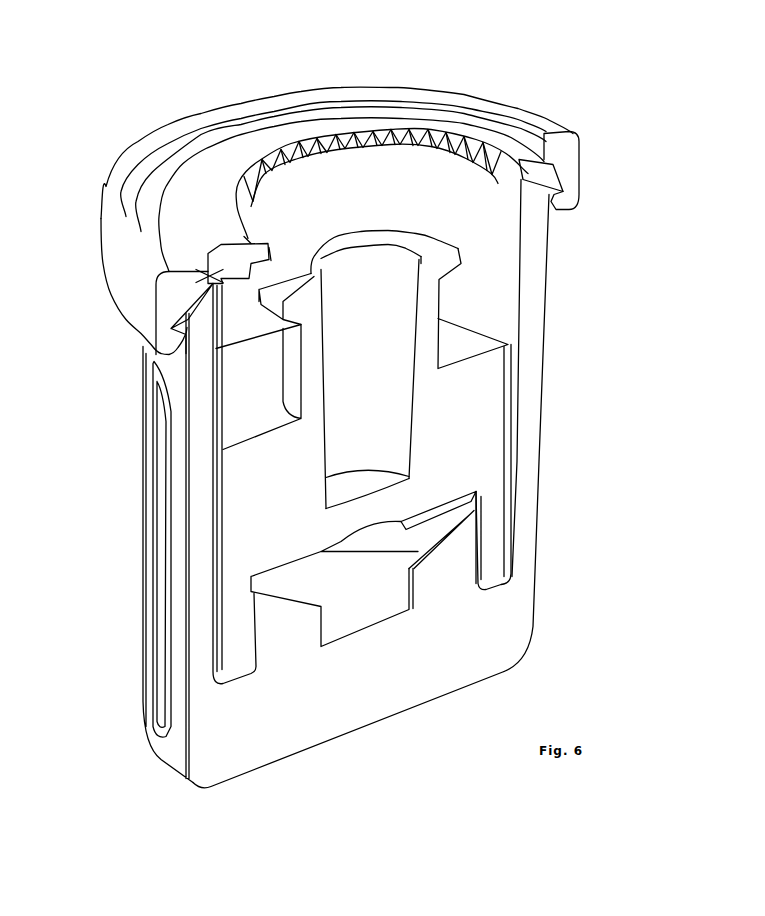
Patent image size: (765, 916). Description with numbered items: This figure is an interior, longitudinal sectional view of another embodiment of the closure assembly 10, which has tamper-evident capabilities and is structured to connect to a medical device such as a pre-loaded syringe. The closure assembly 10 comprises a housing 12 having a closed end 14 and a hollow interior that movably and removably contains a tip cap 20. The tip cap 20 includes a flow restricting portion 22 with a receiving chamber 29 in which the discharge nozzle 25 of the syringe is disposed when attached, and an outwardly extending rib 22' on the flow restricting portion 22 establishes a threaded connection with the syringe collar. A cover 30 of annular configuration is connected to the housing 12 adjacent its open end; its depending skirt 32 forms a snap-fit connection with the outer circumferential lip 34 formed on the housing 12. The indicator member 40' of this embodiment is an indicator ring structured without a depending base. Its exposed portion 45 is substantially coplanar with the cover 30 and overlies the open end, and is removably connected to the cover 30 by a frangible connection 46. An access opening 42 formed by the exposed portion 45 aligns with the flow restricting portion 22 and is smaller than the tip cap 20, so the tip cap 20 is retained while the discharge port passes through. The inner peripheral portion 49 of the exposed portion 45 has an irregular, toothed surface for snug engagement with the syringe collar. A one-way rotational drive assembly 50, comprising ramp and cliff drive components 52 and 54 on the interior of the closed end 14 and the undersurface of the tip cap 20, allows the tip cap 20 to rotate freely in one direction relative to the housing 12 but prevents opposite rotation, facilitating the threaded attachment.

The closure assembly 10 is at (677, 233).
The housing 12 is at (537, 502).
The closed end 14 is at (503, 670).
The tip cap 20 is at (489, 441).
The flow restricting portion 22 is at (466, 370).
The rib 22' is at (294, 260).
The discharge nozzle 25 is at (257, 484).
The receiving chamber 29 is at (367, 464).
The cover 30 is at (106, 176).
The depending skirt 32 is at (167, 338).
The outer circumferential lip 34 is at (193, 308).
The indicator member 40' is at (396, 141).
The access opening 42 is at (413, 175).
The exposed portion 45 is at (348, 122).
The frangible connection 46 is at (162, 203).
The inner peripheral portion 49 is at (307, 127).
The one-way rotational drive assembly 50 is at (345, 610).
The ramp and cliff drive component 52 is at (434, 553).
The ramp and cliff drive component 54 is at (440, 505).